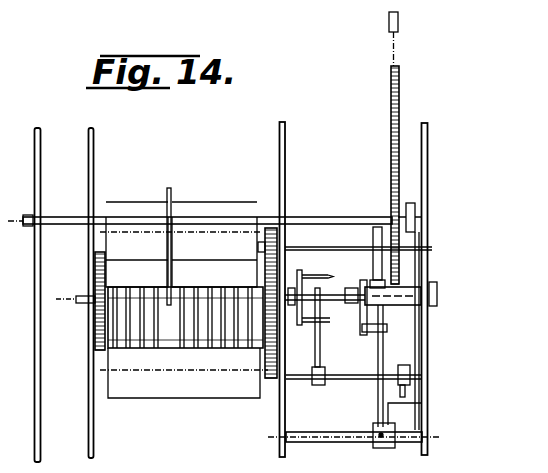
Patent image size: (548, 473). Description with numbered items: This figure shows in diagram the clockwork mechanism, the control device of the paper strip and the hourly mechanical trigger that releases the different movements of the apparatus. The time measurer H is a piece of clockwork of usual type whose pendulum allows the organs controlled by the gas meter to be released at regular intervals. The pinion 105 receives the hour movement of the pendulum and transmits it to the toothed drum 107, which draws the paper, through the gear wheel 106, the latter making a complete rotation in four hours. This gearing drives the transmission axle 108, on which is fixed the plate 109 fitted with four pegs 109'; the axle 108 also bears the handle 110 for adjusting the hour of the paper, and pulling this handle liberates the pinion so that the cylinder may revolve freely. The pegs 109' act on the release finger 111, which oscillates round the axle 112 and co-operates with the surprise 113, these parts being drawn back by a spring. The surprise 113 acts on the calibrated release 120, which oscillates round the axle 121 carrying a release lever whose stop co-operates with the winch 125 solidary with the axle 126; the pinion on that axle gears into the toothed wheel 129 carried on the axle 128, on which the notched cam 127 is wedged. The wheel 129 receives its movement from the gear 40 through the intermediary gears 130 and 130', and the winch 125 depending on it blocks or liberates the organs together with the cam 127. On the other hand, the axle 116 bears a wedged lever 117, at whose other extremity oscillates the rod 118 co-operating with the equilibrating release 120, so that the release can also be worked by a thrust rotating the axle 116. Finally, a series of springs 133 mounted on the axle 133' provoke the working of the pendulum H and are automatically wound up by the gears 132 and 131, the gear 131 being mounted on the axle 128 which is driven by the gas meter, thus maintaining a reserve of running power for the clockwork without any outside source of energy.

The time measurer H is at (55, 157).
The gear 40 is at (389, 27).
The pinion 105 is at (93, 308).
The gear wheel 106 is at (95, 263).
The toothed drum 107 is at (213, 210).
The transmission axle 108 is at (334, 297).
The plate 109 is at (312, 267).
The pegs 109' is at (339, 265).
The handle 110 is at (437, 285).
The release finger 111 is at (316, 352).
The axle 112 is at (360, 375).
The surprise 113 is at (410, 389).
The axle 116 is at (140, 204).
The lever 117 is at (420, 208).
The rod 118 is at (419, 342).
The calibrated release 120 is at (405, 410).
The axle 121 is at (313, 436).
The winch 125 is at (359, 339).
The axle 126 is at (348, 308).
The notched cam 127 is at (373, 239).
The axle 128 is at (304, 242).
The toothed wheel 129 is at (431, 261).
The gear 130 is at (374, 175).
The gear 130' is at (417, 100).
The gear 131 is at (262, 244).
The gear 132 is at (264, 377).
The springs 133 is at (185, 327).
The axle 133' is at (309, 307).